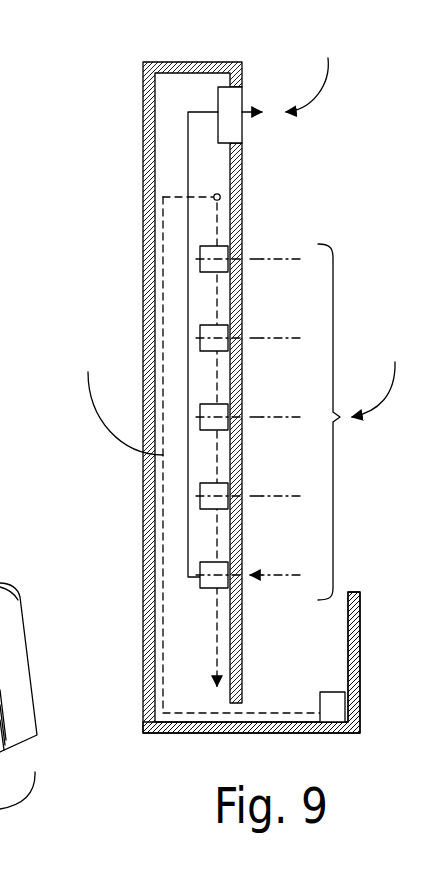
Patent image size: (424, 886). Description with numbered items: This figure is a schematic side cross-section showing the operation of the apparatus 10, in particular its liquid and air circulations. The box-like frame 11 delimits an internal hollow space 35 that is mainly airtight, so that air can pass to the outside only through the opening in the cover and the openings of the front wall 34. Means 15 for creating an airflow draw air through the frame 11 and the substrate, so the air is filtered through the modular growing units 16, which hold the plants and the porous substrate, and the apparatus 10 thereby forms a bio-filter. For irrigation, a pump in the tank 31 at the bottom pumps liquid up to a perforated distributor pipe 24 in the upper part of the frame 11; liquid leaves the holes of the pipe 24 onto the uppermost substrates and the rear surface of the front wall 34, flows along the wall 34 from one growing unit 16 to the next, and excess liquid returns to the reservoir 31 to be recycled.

The apparatus 10 is at (92, 300).
The frame 11 is at (143, 272).
The means for creating an airflow 15 is at (242, 98).
The growing unit 16 is at (228, 246).
The distributor pipe 24 is at (215, 192).
The tank 31 is at (335, 620).
The front wall 34 is at (242, 197).
The space 35 is at (170, 587).